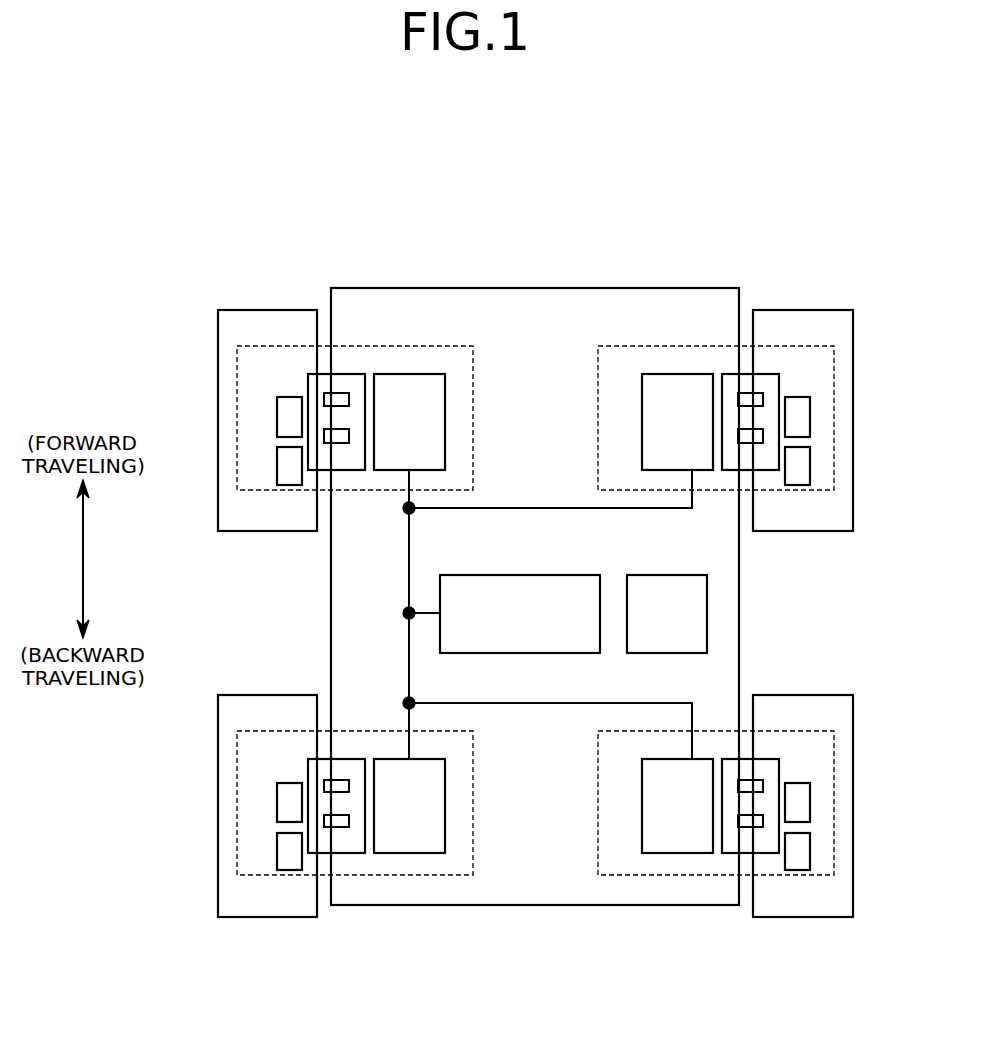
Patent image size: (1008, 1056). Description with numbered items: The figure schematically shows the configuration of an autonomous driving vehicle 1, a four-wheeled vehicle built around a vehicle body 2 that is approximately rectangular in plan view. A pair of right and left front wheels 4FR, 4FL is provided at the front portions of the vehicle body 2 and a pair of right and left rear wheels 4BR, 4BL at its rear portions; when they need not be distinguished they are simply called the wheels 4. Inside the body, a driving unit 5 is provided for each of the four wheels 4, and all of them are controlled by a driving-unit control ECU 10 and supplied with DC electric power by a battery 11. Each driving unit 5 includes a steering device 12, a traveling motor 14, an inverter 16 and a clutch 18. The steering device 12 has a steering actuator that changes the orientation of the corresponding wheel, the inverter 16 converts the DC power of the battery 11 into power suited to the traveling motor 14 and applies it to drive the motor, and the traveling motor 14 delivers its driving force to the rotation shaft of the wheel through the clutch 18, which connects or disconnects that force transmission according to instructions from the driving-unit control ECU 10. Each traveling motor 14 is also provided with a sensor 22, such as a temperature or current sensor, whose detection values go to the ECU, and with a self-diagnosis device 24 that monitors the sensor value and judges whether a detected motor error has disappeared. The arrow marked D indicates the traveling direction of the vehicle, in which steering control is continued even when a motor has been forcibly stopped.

The autonomous driving vehicle 1 is at (551, 177).
The vehicle body 2 is at (558, 288).
The wheels 4 is at (535, 615).
The left front wheel 4FL is at (262, 310).
The right front wheel 4FR is at (803, 310).
The left rear wheel 4BL is at (260, 920).
The right rear wheel 4BR is at (800, 920).
The driving unit 5 is at (392, 346).
The driving-unit control ECU 10 is at (533, 575).
The battery 11 is at (658, 575).
The steering device 12 is at (277, 465).
The traveling motor 14 is at (343, 470).
The inverter 16 is at (428, 470).
The clutch 18 is at (277, 410).
The sensor 22 is at (324, 398).
The self-diagnosis device 24 is at (324, 436).
The traveling direction D is at (85, 558).